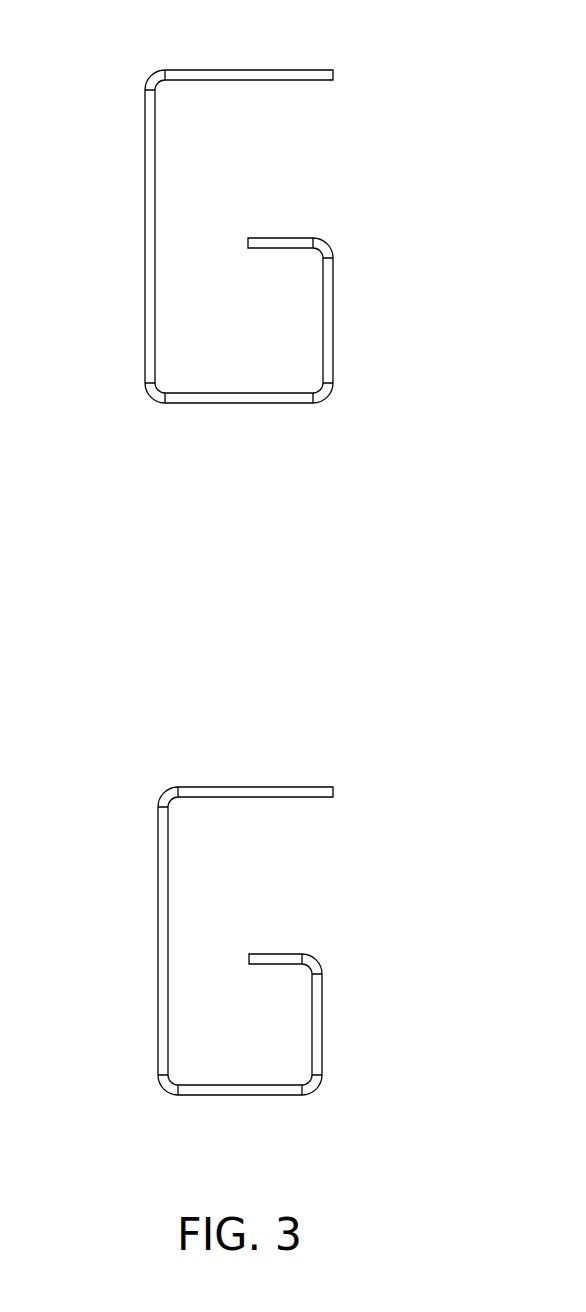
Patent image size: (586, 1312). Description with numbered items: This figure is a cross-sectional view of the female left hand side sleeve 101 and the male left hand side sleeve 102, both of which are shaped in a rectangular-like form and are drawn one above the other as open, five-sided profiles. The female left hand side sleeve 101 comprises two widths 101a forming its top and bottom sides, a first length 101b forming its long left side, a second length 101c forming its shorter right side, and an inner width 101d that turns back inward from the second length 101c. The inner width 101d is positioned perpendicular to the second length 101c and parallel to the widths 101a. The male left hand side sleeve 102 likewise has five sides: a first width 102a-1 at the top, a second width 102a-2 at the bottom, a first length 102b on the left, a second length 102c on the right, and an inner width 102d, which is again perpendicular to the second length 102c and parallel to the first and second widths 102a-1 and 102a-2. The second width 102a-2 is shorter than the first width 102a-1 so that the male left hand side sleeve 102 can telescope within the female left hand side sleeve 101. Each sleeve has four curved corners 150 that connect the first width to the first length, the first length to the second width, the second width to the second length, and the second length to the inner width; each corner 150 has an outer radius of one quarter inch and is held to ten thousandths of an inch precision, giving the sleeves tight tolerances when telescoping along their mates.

The female left hand side sleeve 101 is at (418, 128).
The widths 101a is at (250, 70).
The first length 101b is at (145, 182).
The second length 101c is at (333, 338).
The inner width 101d is at (278, 238).
The male left hand side sleeve 102 is at (437, 850).
The first width 102a-1 is at (250, 787).
The second width 102a-2 is at (240, 1095).
The first length 102b is at (155, 912).
The second length 102c is at (326, 1030).
The inner width 102d is at (275, 953).
The corners 150 is at (152, 75).